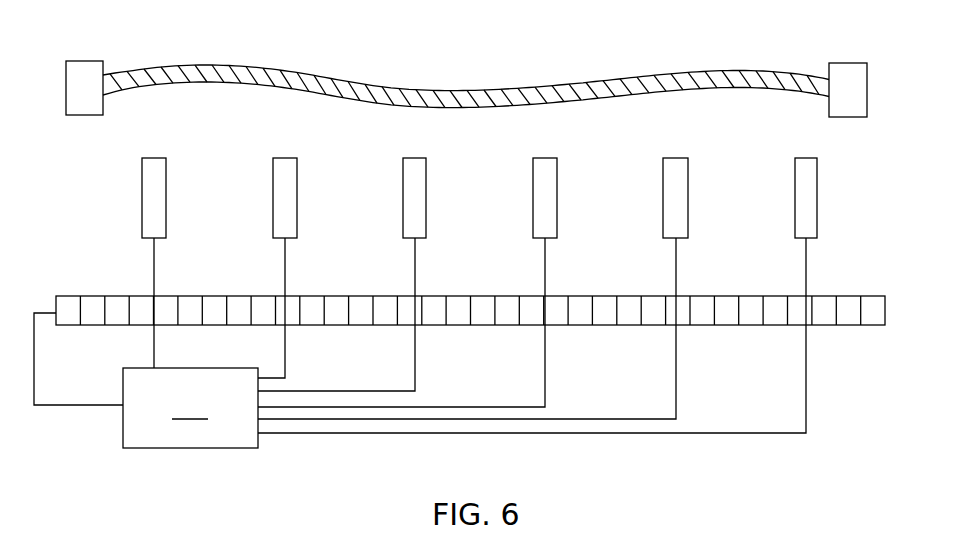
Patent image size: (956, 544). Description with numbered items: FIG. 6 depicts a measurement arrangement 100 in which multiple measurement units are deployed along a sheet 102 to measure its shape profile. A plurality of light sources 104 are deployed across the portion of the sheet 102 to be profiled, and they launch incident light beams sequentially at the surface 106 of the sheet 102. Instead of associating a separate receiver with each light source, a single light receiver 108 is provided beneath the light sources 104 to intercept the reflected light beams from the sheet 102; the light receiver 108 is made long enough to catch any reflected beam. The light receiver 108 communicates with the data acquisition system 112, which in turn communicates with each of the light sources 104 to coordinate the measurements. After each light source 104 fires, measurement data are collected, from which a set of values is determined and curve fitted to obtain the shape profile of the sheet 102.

The sensing system 100 is at (117, 198).
The sheet 102 is at (600, 81).
The light sources 104 is at (285, 173).
The surface 106 is at (611, 97).
The light receiver 108 is at (603, 327).
The data acquisition system 112 is at (190, 408).